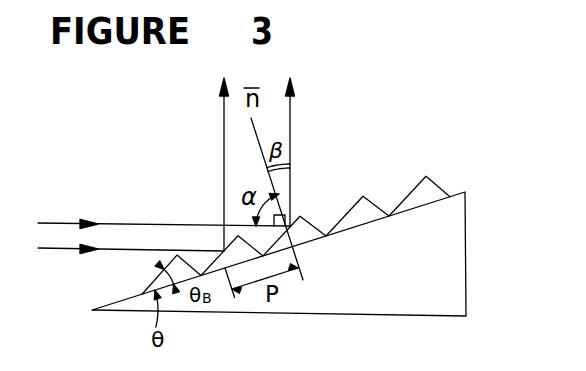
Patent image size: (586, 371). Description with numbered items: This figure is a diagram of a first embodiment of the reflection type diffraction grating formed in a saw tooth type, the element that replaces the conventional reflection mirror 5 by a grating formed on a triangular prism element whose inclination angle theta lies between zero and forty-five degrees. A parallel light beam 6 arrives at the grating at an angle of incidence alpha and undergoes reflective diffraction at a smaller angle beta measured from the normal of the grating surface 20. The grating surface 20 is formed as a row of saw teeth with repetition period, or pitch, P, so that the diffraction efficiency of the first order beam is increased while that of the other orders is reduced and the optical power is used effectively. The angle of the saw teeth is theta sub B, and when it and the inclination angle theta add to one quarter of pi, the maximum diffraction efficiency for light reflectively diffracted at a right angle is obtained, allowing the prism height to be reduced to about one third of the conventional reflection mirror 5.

The reflection mirror 5 is at (443, 254).
The parallel light beam 6 is at (153, 223).
The grating surface 20 is at (354, 227).